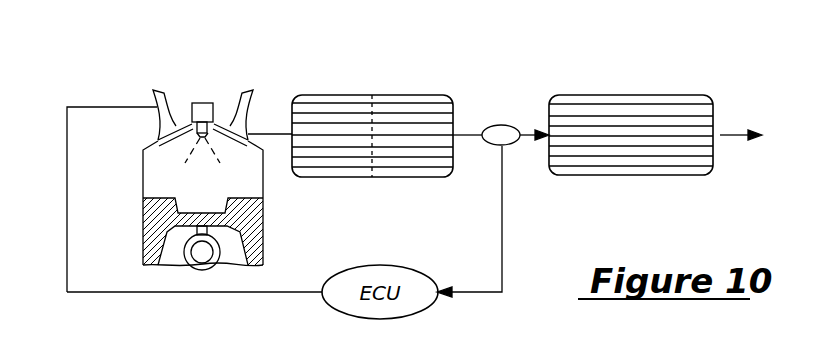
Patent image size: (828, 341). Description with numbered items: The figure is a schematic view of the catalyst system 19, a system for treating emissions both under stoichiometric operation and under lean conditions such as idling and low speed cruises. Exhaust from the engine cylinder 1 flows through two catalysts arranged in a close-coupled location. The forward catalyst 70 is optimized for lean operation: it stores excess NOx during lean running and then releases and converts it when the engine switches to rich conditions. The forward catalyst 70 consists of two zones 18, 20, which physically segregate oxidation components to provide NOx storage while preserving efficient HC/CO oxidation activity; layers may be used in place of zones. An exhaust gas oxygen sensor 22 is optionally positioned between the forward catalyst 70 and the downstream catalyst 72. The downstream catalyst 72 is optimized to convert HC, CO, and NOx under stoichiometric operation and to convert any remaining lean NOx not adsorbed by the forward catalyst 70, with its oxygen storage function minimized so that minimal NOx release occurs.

The engine cylinder 1 is at (143, 254).
The first zone 18 is at (335, 95).
The second zone 20 is at (407, 95).
The forward catalyst 70 is at (332, 177).
The catalyst system 19 is at (542, 68).
The exhaust gas oxygen sensor 22 is at (507, 147).
The downstream catalyst 72 is at (630, 175).